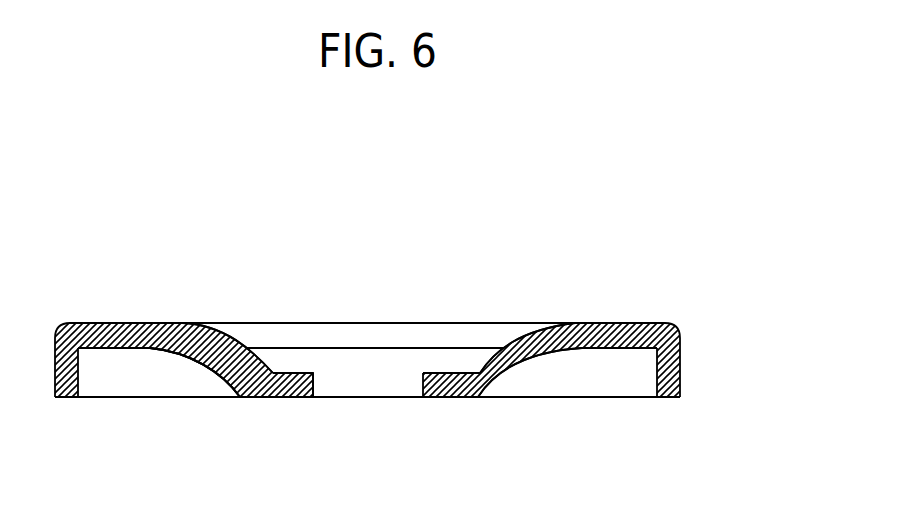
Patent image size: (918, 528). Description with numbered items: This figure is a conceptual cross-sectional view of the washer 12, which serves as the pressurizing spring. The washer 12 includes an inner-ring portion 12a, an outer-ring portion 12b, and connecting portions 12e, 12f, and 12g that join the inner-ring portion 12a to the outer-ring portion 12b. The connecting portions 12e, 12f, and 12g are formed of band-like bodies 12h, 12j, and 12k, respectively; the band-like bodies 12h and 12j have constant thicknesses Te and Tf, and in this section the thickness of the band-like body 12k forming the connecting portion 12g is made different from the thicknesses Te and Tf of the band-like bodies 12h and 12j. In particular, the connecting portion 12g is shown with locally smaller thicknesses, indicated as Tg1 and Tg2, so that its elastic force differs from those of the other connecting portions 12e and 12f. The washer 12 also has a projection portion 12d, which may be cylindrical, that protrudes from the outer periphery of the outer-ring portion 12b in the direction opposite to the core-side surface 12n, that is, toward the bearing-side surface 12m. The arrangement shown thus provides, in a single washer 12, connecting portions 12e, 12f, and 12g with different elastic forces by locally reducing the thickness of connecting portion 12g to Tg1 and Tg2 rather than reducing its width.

The washer 12 is at (632, 320).
The inner-ring portion 12a is at (423, 397).
The outer-ring portion 12b is at (623, 320).
The projection portion 12d is at (672, 398).
The connecting portion 12e is at (188, 357).
The connecting portion 12f is at (188, 357).
The connecting portion 12g is at (522, 343).
The band-like body 12h is at (242, 388).
The band-like body 12j is at (242, 388).
The band-like body 12k is at (575, 349).
The bearing-side surface 12m is at (443, 398).
The core-side surface 12n is at (652, 322).
The thickness of band-like body 12h Te is at (212, 397).
The thickness of band-like body 12j Tf is at (213, 383).
The locally smaller thickness of connecting portion 12g Tg1 is at (552, 387).
The locally smaller thickness of connecting portion 12g Tg2 is at (507, 397).